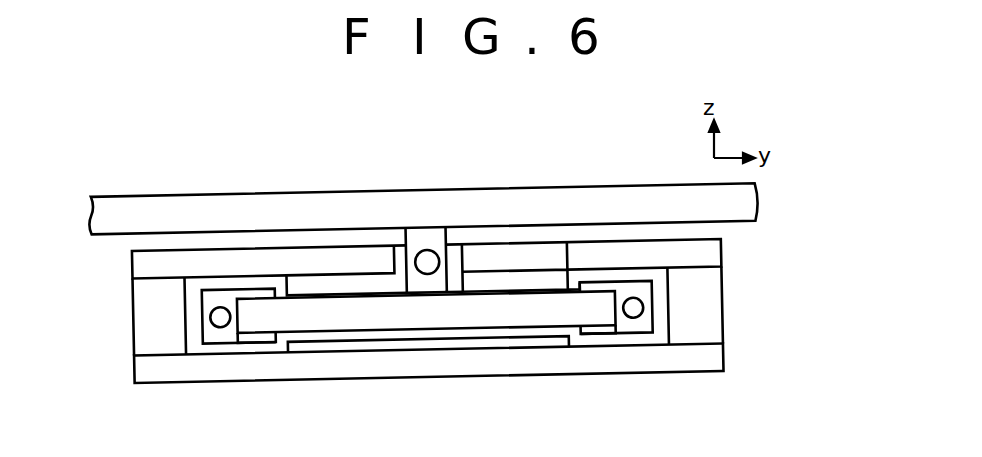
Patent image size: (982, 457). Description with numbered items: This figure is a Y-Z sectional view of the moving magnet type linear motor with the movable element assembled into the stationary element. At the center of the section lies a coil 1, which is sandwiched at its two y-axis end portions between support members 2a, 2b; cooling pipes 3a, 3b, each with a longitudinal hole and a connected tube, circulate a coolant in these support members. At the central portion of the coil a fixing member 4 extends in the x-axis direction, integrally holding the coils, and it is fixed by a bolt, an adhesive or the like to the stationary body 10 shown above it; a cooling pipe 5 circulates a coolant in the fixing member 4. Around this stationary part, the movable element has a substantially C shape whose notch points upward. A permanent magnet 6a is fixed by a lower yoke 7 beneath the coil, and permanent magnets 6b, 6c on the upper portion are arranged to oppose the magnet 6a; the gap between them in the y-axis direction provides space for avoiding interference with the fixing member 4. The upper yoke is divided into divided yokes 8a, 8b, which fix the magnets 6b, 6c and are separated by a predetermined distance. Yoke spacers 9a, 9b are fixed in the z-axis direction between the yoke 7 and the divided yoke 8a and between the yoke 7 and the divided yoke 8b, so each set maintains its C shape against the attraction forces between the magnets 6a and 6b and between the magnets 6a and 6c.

The coil 1 is at (382, 317).
The support member 2a is at (258, 336).
The support member 2b is at (627, 332).
The cooling pipe 3a is at (221, 328).
The cooling pipe 3b is at (633, 320).
The fixing member 4 is at (420, 236).
The cooling pipe 5 is at (428, 263).
The permanent magnet 6a is at (450, 345).
The permanent magnet 6b is at (314, 273).
The permanent magnet 6c is at (516, 276).
The lower yoke 7 is at (515, 362).
The divided yoke 8a is at (143, 266).
The divided yoke 8b is at (698, 260).
The yoke spacer 9a is at (148, 318).
The yoke spacer 9b is at (700, 316).
The stationary body 10 is at (208, 196).